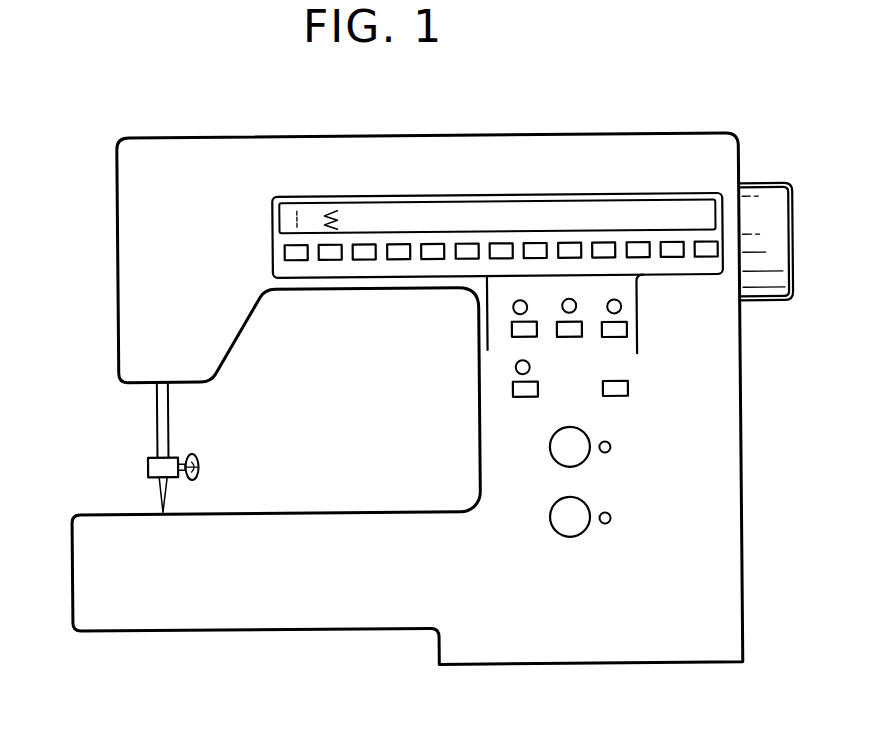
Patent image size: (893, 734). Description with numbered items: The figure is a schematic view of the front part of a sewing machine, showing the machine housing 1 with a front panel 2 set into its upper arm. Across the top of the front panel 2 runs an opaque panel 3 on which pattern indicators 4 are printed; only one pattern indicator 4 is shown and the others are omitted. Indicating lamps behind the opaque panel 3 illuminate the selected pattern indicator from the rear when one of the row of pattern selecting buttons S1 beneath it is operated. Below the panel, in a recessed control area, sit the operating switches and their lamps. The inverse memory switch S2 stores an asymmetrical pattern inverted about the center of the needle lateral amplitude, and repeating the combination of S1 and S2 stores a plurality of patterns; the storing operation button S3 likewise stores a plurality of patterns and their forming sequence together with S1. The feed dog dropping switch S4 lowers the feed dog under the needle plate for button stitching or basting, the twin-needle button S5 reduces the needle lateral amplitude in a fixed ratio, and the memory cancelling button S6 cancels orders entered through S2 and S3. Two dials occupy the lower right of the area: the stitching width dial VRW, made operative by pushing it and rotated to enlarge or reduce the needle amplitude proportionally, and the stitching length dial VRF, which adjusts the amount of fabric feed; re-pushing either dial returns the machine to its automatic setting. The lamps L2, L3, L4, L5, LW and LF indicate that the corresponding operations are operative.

The machine housing 1 is at (454, 136).
The front panel 2 is at (304, 196).
The opaque panel 3 is at (374, 203).
The pattern indicator 4 is at (334, 204).
The pattern selecting button S1 is at (286, 250).
The indicating lamp L2 is at (622, 309).
The indicating lamp L3 is at (514, 308).
The indicating lamp L4 is at (563, 302).
The indicating lamp L5 is at (516, 370).
The inverse memory operating button S2 is at (627, 331).
The storing operation button S3 is at (573, 335).
The feed dog dropping switch S4 is at (514, 328).
The twin-needle operating button S5 is at (513, 398).
The memory cancelling operation button S6 is at (628, 390).
The stitching width adjusting dial VRW is at (567, 448).
The stitching length adjusting dial VRF is at (567, 514).
The indicating lamp LW is at (610, 449).
The indicating lamp LF is at (610, 520).